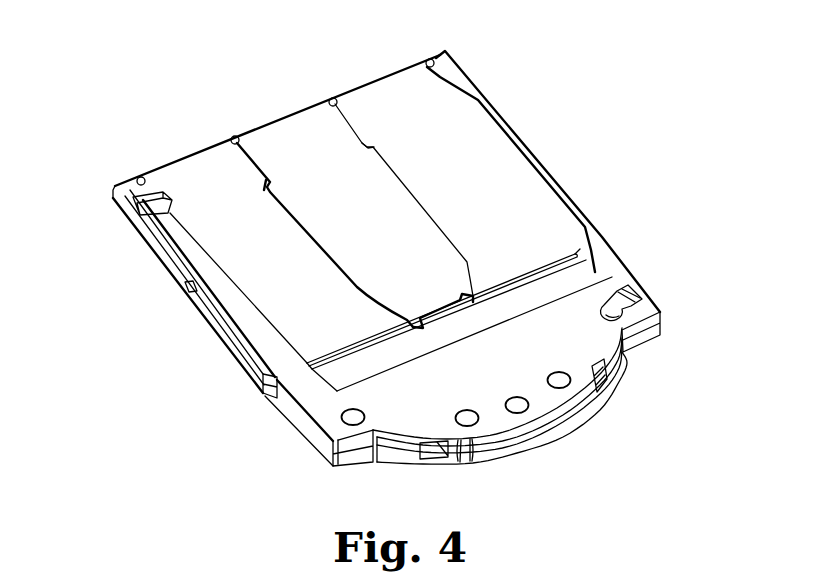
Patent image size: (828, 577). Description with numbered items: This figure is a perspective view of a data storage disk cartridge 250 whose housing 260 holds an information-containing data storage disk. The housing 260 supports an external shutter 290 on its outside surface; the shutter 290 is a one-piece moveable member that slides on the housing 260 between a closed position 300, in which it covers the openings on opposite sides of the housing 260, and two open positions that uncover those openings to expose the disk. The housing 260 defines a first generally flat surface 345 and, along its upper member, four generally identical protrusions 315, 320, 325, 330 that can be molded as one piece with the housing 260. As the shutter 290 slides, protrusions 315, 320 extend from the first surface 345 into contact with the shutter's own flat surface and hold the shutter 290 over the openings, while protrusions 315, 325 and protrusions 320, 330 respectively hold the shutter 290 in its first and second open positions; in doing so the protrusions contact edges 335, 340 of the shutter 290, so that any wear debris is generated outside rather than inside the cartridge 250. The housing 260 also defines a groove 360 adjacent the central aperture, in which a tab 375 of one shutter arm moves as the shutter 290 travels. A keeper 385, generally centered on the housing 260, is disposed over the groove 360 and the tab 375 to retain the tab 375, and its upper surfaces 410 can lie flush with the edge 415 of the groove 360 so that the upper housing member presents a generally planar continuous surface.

The cartridge 250 is at (132, 44).
The housing 260 is at (120, 214).
The external shutter 290 is at (398, 207).
The closed position 300 is at (327, 231).
The protrusion 315 is at (234, 136).
The protrusion 320 is at (331, 98).
The protrusion 325 is at (138, 177).
The protrusion 330 is at (430, 58).
The edge of shutter 335 is at (257, 160).
The edge of shutter 340 is at (345, 122).
The first generally flat surface 345 is at (181, 172).
The groove 360 is at (587, 265).
The tab 375 is at (442, 298).
The keeper 385 is at (612, 277).
The upper surfaces of keeper 410 is at (308, 383).
The edge of groove 415 is at (320, 440).